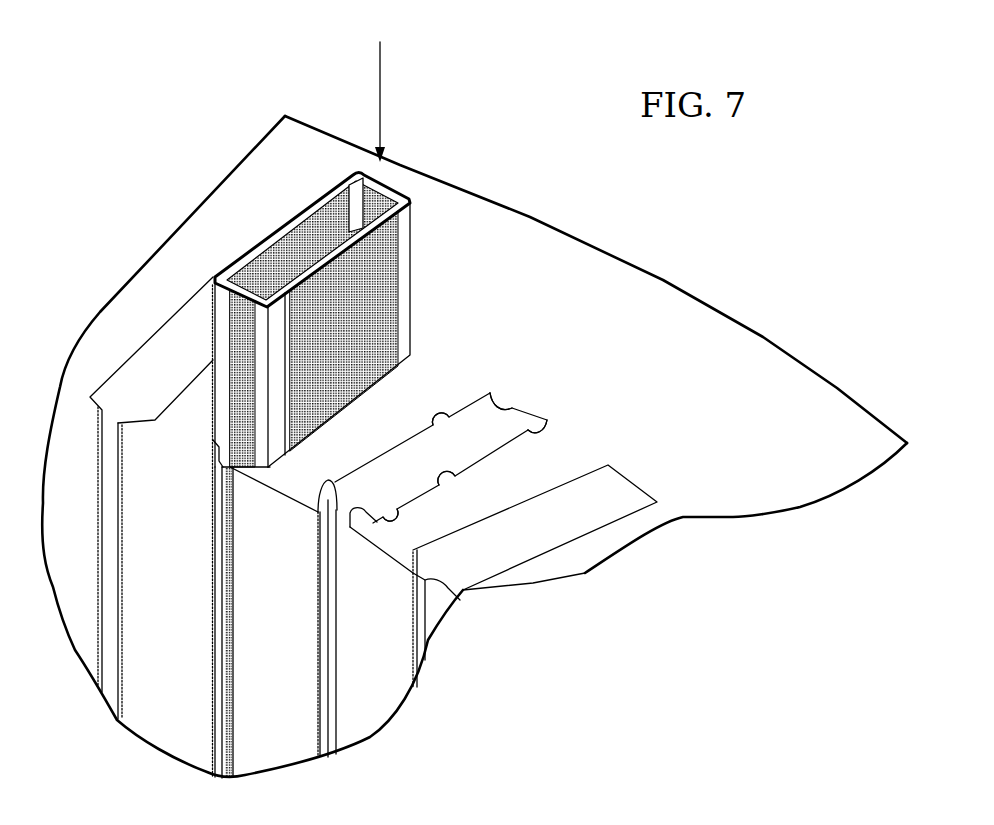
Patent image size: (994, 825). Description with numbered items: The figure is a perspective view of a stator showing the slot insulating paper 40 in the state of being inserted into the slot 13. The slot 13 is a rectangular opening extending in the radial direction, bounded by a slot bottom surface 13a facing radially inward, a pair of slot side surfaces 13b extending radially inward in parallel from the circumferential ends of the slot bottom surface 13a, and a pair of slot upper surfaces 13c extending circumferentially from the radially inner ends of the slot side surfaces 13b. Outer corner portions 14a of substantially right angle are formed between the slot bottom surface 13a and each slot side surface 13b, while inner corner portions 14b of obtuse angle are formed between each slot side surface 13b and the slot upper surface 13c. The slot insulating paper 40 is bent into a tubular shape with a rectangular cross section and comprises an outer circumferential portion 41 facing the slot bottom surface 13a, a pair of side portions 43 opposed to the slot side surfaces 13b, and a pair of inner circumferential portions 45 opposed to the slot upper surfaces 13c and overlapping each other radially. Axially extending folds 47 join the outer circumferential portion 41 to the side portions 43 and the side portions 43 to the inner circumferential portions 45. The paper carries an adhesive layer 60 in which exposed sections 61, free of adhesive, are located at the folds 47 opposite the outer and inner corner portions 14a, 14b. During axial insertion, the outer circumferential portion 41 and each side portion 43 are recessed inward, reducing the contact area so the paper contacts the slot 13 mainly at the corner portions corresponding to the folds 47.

The slot 13 is at (545, 553).
The slot bottom surface 13a is at (527, 412).
The slot side surfaces 13b is at (438, 420).
The slot upper surfaces 13c is at (332, 518).
The outer corner portions 14a is at (497, 397).
The inner corner portions 14b is at (272, 432).
The slot insulating paper 40 is at (246, 242).
The outer circumferential portion 41 is at (398, 187).
The side portions 43 is at (287, 228).
The inner circumferential portions 45 is at (258, 316).
The folds 47 is at (354, 174).
The adhesive layer 60 is at (380, 320).
The exposed sections 61 is at (280, 228).